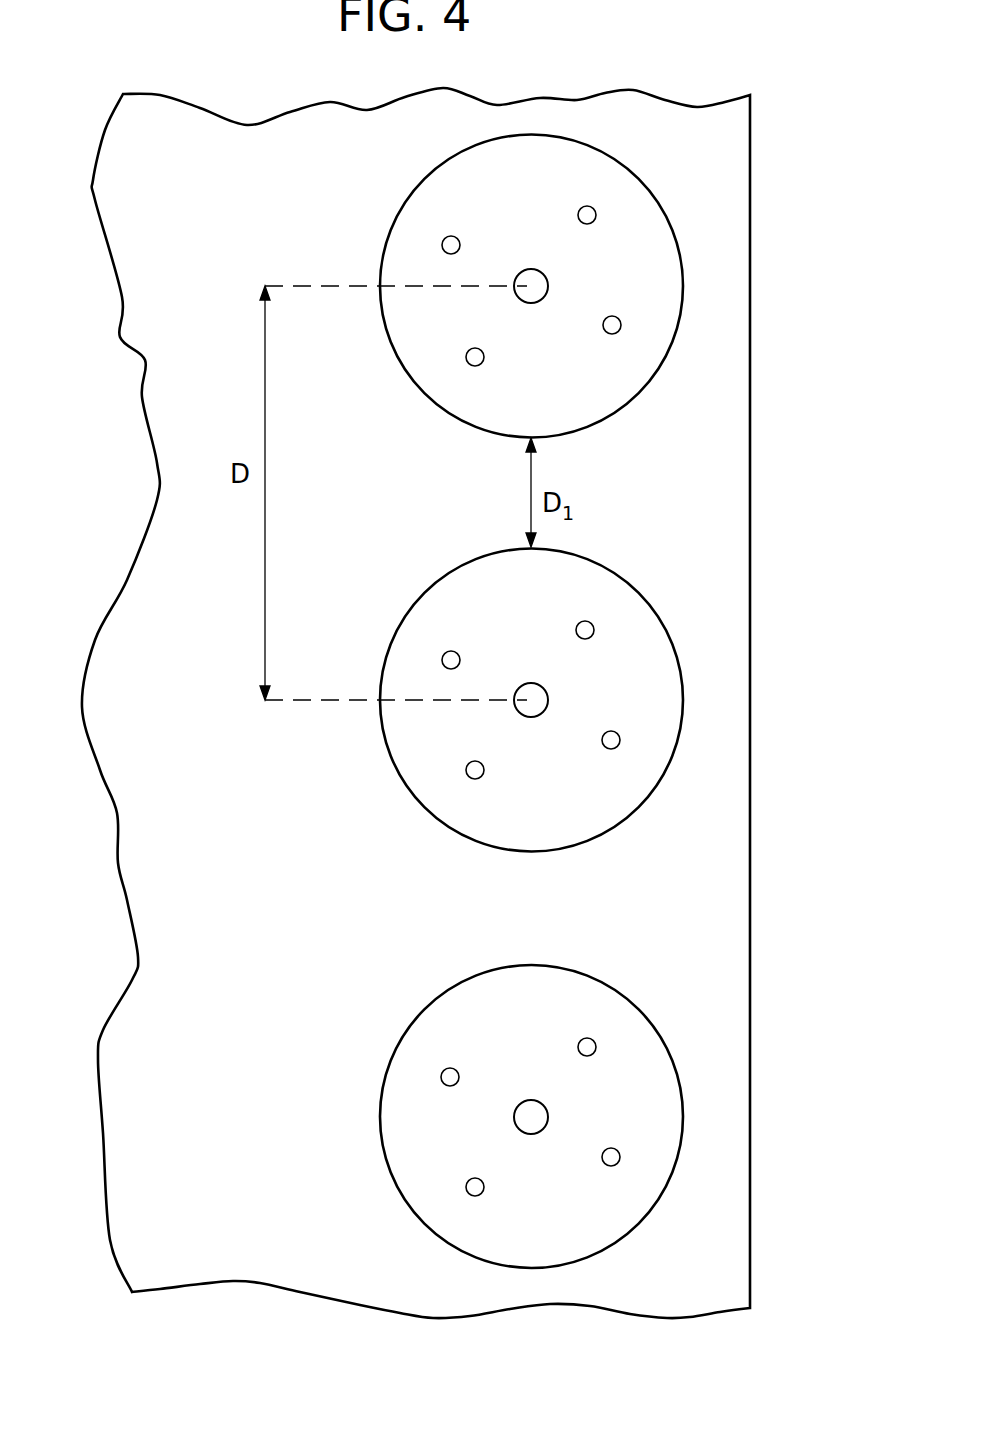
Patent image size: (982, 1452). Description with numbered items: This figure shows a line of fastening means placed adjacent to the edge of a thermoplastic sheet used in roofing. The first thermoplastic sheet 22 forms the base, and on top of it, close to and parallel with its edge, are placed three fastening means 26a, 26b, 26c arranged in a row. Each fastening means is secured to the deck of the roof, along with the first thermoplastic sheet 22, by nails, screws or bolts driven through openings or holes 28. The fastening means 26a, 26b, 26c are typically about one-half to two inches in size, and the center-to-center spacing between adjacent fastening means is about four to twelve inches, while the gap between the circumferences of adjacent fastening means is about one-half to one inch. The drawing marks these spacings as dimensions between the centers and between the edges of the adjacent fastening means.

The first thermoplastic sheet 22 is at (751, 172).
The fastening means 26a is at (683, 292).
The fastening means 26b is at (683, 725).
The fastening means 26c is at (683, 1116).
The openings or holes 28 is at (531, 277).